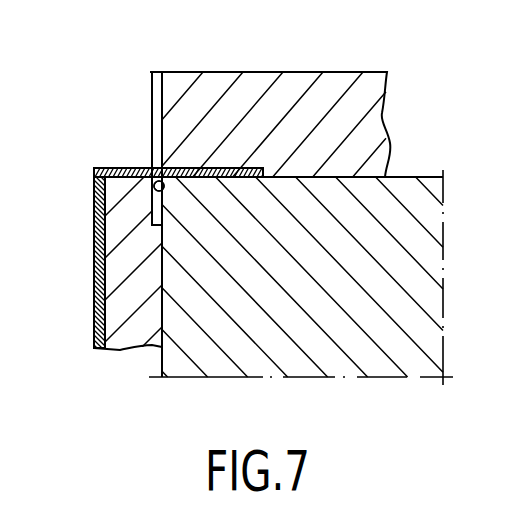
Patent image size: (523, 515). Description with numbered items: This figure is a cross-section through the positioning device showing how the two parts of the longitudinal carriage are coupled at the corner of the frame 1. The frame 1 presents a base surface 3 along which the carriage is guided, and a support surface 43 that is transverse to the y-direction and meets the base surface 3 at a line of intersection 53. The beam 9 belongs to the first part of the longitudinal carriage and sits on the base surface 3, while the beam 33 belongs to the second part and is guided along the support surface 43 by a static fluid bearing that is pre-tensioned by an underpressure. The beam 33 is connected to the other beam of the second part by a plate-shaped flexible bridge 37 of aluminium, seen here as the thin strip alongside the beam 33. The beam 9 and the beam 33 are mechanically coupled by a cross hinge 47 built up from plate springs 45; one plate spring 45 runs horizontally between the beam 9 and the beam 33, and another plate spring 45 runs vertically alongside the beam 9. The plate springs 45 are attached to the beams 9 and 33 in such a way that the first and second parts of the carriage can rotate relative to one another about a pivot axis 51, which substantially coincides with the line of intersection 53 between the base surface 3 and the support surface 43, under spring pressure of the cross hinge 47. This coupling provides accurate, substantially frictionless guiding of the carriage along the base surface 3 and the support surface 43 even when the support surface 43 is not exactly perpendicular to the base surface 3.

The frame 1 is at (418, 318).
The base surface 3 is at (403, 177).
The beam 9 is at (347, 85).
The beam 33 is at (120, 302).
The flexible bridge 37 is at (98, 236).
The support surface 43 is at (162, 362).
The plate spring 45 is at (160, 102).
The cross hinge 47 is at (150, 168).
The pivot axis 51 is at (165, 187).
The line of intersection 53 is at (159, 186).